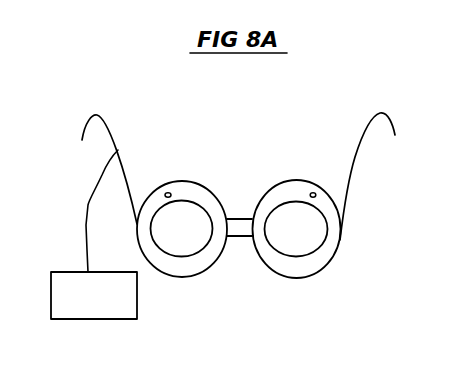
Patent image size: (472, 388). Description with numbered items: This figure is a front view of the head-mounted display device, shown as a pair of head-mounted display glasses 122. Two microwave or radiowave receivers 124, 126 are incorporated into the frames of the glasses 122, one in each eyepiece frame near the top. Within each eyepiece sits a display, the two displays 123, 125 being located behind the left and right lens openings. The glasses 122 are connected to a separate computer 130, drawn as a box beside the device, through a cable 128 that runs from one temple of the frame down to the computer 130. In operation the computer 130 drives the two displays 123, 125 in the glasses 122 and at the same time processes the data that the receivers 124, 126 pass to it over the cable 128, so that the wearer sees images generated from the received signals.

The head-mounted display glasses 122 is at (223, 229).
The display 123 is at (190, 230).
The receiver 124 is at (168, 193).
The display 125 is at (302, 230).
The receiver 126 is at (313, 193).
The cable 128 is at (90, 197).
The computer 130 is at (94, 295).